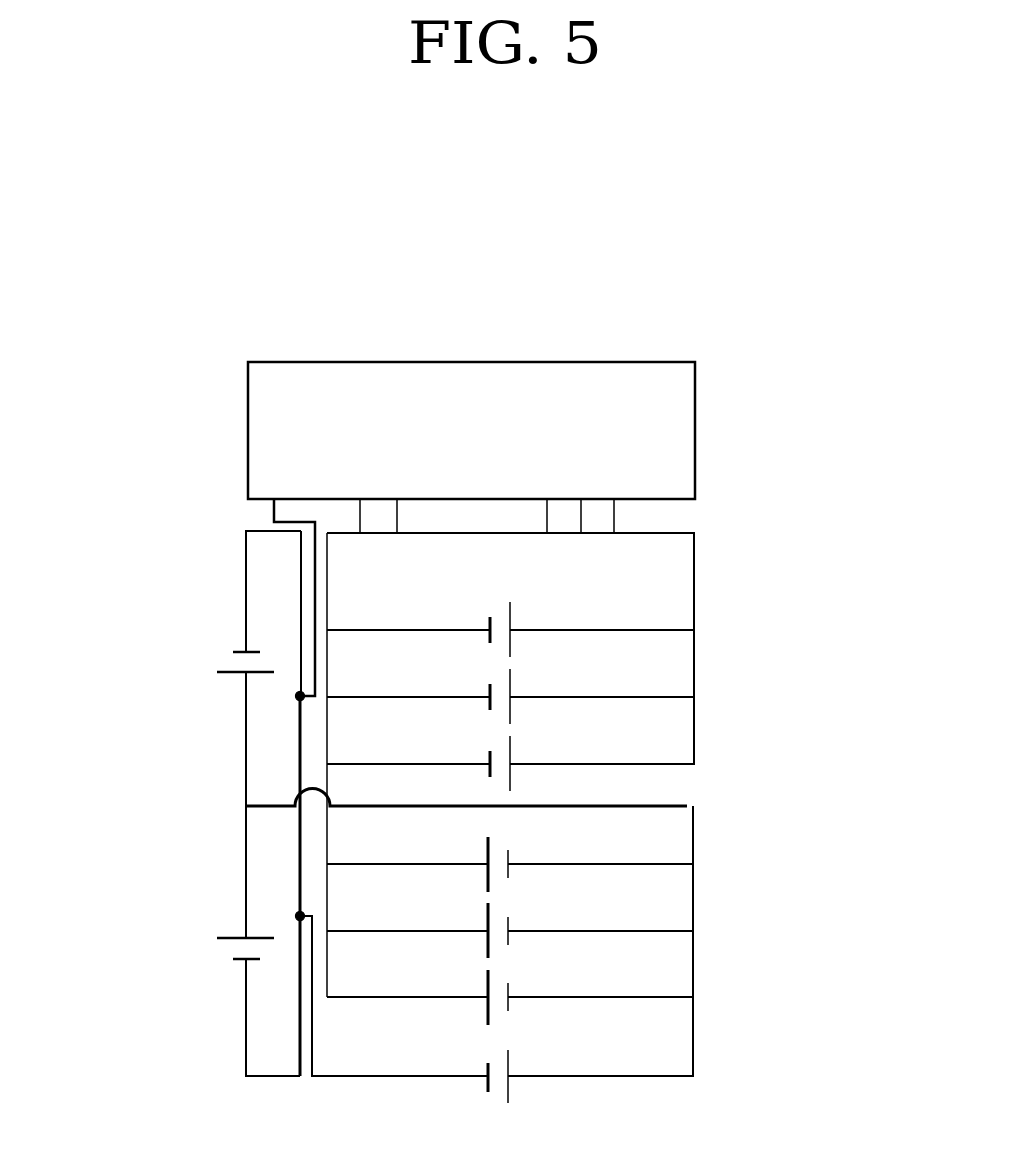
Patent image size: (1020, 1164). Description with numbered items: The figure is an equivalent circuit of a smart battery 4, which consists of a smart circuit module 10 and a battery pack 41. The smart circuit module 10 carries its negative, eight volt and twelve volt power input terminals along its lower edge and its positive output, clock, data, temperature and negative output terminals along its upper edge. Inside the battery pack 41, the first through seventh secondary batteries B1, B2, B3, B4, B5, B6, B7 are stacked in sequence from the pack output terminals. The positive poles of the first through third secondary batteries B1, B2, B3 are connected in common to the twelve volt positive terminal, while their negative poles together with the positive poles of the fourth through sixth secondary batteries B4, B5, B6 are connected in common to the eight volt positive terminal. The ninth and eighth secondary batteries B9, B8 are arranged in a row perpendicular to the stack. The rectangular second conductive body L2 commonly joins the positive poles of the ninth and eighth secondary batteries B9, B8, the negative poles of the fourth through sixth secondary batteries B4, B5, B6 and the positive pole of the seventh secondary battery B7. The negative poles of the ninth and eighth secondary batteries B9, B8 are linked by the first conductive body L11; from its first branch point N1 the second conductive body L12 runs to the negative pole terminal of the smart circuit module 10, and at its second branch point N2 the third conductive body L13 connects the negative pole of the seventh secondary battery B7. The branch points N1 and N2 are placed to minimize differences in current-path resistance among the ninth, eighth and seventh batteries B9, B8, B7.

The smart battery 4 is at (721, 331).
The smart circuit module 10 is at (248, 432).
The battery pack 41 is at (130, 776).
The first conductive body L11 is at (300, 773).
The second conductive body L12 is at (274, 511).
The third conductive body L13 is at (312, 1010).
The rectangular second conductive body L2 is at (678, 805).
The first branch point N1 is at (283, 702).
The second branch point N2 is at (280, 910).
The first secondary battery B1 is at (510, 624).
The second secondary battery B2 is at (510, 691).
The third secondary battery B3 is at (510, 758).
The fourth secondary battery B4 is at (510, 857).
The fifth secondary battery B5 is at (510, 924).
The sixth secondary battery B6 is at (510, 990).
The seventh secondary battery B7 is at (518, 1069).
The eighth secondary battery B8 is at (237, 932).
The ninth secondary battery B9 is at (237, 646).